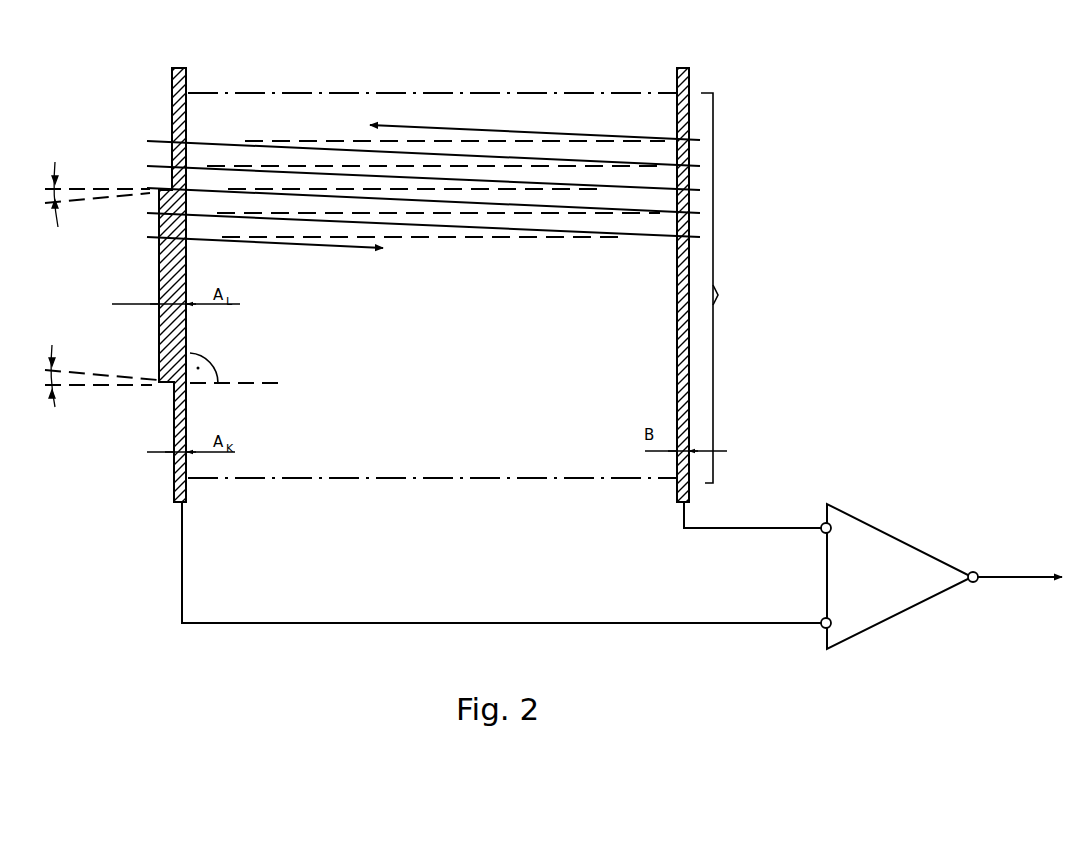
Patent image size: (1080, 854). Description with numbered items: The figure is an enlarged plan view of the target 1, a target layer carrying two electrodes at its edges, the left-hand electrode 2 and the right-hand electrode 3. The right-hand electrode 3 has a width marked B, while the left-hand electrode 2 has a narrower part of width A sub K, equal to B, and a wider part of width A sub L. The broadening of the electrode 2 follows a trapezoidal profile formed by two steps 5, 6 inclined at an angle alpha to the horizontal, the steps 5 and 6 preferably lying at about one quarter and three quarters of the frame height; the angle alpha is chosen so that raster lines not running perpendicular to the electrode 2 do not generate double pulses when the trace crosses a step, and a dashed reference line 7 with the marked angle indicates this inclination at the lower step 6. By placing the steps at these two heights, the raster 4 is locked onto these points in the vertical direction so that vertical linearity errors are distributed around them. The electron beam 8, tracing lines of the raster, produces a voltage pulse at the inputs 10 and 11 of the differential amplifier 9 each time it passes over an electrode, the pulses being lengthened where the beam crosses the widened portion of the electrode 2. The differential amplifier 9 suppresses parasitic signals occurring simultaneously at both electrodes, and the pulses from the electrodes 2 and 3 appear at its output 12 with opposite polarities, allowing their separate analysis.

The target 1 is at (448, 388).
The left-hand electrode 2 is at (178, 62).
The right-hand electrode 3 is at (683, 63).
The raster 4 is at (719, 288).
The step 5 is at (163, 188).
The step 6 is at (168, 386).
The perpendicular reference line 7 is at (242, 373).
The electron beam 8 is at (272, 247).
The differential amplifier 9 is at (878, 595).
The input 10 is at (757, 517).
The input 11 is at (506, 577).
The output 12 is at (1015, 566).